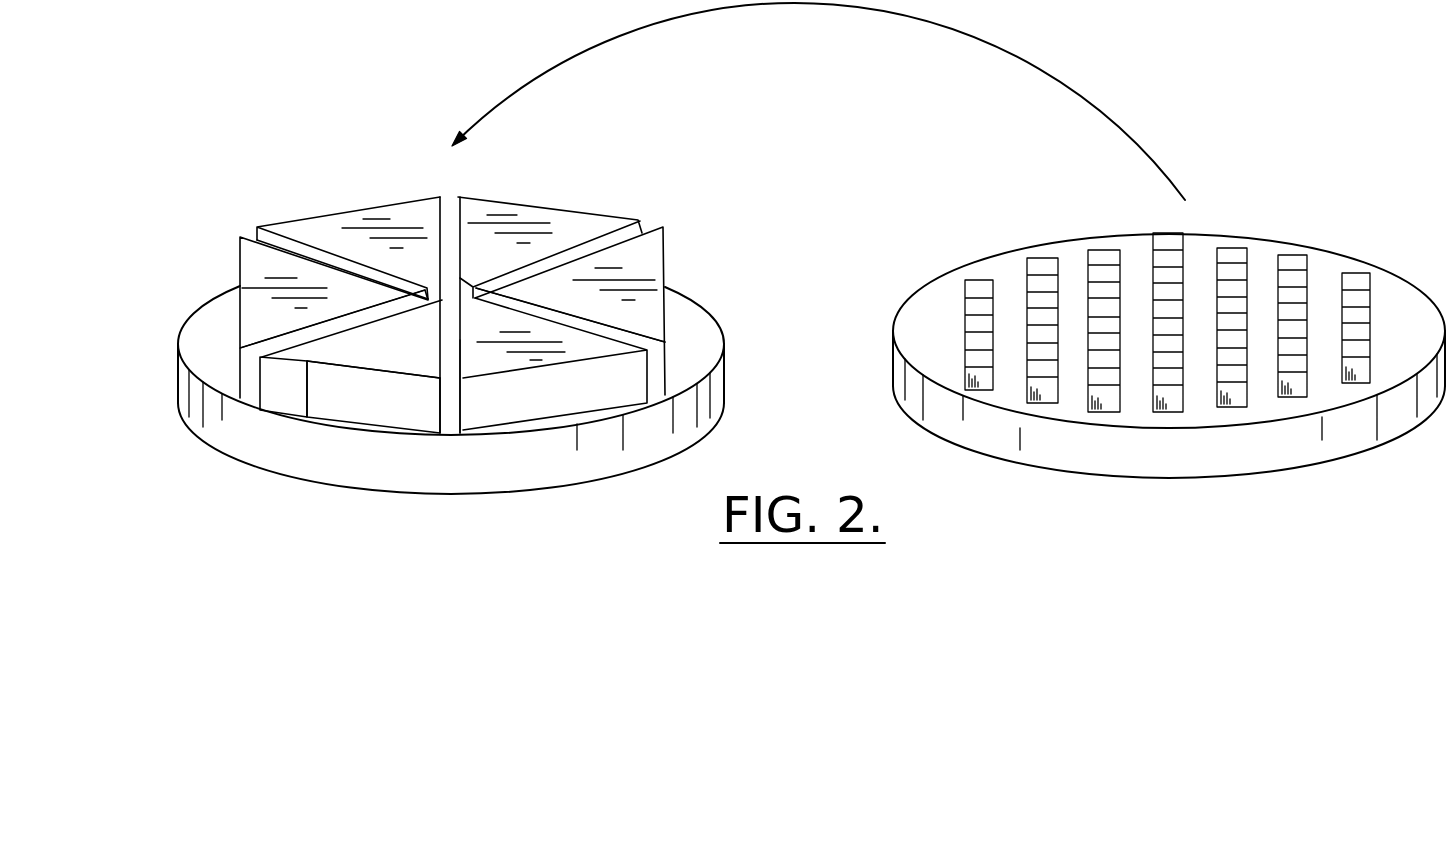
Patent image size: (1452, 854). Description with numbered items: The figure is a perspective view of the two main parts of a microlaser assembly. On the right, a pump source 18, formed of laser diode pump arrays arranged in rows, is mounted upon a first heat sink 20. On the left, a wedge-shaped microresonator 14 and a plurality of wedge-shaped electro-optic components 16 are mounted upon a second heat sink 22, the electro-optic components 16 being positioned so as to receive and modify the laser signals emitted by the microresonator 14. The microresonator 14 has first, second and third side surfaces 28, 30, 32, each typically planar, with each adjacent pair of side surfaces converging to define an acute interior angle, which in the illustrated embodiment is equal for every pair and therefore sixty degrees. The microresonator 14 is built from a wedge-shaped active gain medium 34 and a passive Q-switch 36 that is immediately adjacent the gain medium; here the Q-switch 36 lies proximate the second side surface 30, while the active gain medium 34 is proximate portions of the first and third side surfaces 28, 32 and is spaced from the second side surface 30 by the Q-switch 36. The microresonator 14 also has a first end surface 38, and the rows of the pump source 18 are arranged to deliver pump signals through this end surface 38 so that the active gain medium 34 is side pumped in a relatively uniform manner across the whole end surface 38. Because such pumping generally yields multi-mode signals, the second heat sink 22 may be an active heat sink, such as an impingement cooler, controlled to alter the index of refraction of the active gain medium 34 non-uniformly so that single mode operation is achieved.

The microresonator 14 is at (435, 338).
The electro-optic components 16 is at (337, 217).
The pump source 18 is at (975, 307).
The first heat sink 20 is at (1347, 428).
The second heat sink 22 is at (600, 453).
The first side surface 28 is at (357, 406).
The second side surface 30 is at (367, 325).
The third side surface 32 is at (447, 368).
The active gain medium 34 is at (438, 325).
The Q-switch 36 is at (270, 387).
The first end surface 38 is at (422, 332).